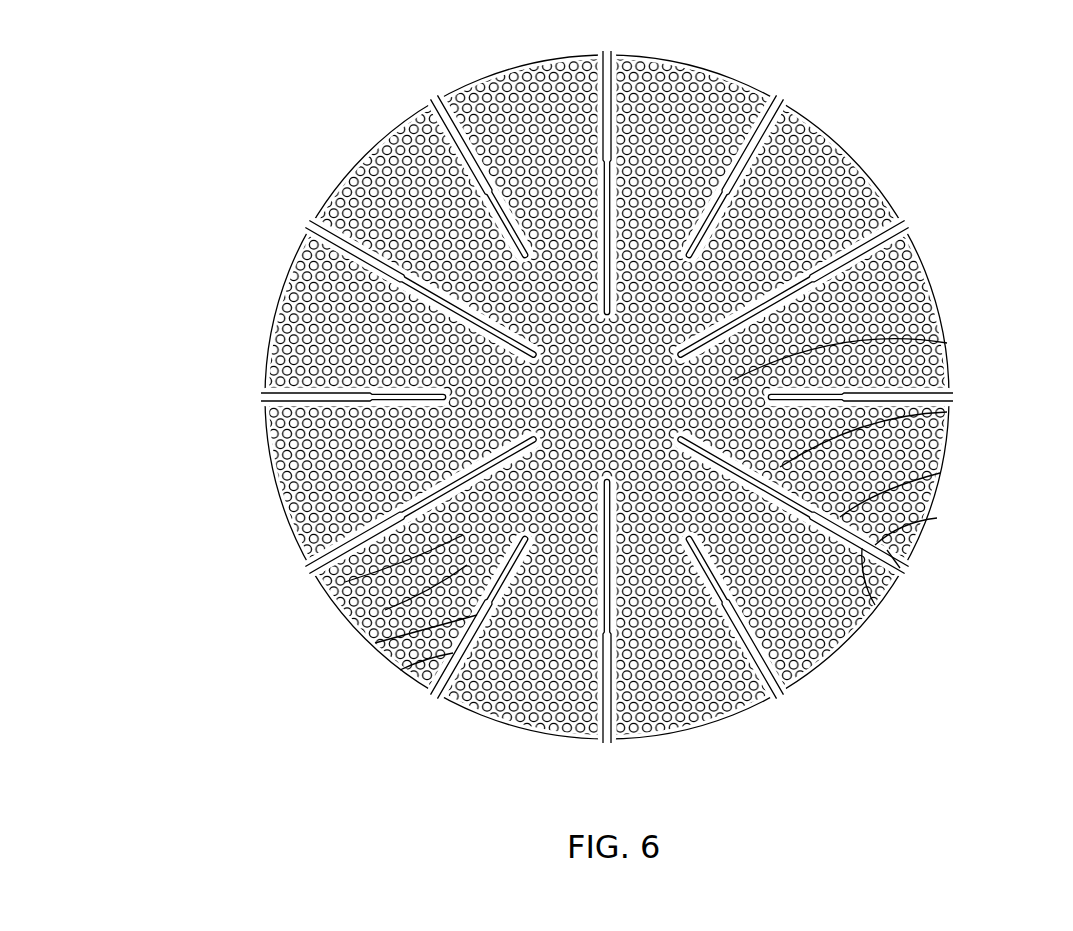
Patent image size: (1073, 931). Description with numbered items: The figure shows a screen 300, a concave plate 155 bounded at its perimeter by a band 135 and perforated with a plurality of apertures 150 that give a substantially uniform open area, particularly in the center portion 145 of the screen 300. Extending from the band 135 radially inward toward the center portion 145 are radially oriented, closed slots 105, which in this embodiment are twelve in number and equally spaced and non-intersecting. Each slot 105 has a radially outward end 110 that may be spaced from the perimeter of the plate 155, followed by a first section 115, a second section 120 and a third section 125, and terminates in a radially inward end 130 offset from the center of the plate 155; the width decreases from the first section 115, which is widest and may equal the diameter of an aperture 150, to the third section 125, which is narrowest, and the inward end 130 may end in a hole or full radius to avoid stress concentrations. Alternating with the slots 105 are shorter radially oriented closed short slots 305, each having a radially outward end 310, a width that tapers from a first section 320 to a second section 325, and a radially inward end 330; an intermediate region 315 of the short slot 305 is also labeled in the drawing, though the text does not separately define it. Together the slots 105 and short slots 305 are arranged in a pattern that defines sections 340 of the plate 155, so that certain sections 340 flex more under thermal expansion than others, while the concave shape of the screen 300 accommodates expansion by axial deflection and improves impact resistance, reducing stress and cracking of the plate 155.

The screen 300 is at (920, 205).
The slot 105 is at (875, 605).
The radially outward end 110 is at (900, 568).
The first section 115 is at (937, 518).
The second section 120 is at (940, 473).
The third section 125 is at (947, 412).
The radially inward end 130 is at (947, 343).
The band 135 is at (831, 656).
The center portion 145 is at (633, 370).
The aperture 150 is at (950, 318).
The plate 155 is at (798, 120).
The short slot 305 is at (467, 695).
The radially outward end 310 is at (433, 695).
The hole row 315 is at (400, 670).
The first section 320 is at (375, 643).
The second section 325 is at (385, 610).
The radially inward end 330 is at (345, 582).
The section 340 is at (405, 82).